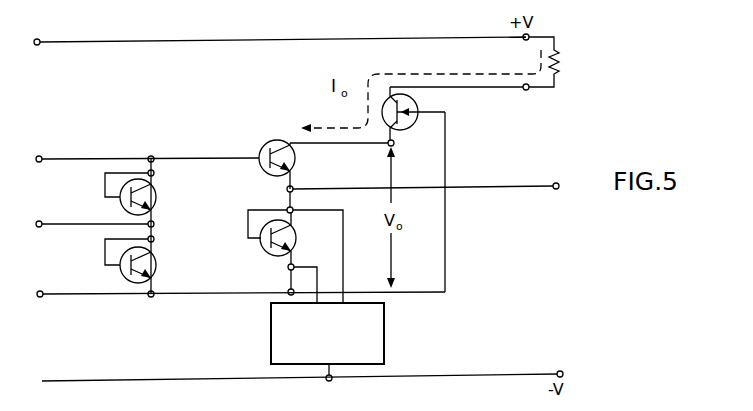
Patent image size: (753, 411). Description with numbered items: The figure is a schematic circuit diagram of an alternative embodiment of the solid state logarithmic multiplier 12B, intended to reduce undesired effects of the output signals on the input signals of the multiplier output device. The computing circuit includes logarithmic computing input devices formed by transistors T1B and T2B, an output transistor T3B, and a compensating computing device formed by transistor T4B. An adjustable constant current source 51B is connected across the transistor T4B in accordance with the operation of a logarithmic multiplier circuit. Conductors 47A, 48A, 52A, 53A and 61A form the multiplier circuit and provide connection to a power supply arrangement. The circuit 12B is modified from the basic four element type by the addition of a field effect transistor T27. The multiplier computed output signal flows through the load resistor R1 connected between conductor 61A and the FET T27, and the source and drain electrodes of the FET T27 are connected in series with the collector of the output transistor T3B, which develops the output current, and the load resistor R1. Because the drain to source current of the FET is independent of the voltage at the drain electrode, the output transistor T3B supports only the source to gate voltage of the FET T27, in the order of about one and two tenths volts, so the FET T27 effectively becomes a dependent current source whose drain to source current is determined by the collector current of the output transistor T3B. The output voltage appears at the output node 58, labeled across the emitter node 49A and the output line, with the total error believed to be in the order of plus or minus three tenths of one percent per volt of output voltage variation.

The conductor 61A is at (356, 37).
The conductor 47A is at (213, 158).
The emitter node of transistor T3B 49A is at (287, 183).
The output node 58 is at (358, 147).
The conductor 53A is at (486, 189).
The conductor 48A is at (420, 293).
The adjustable constant current source 51B is at (384, 353).
The conductor 52A is at (465, 376).
The logarithmic multiplier 12B is at (132, 226).
The transistor T1B is at (157, 197).
The transistor T2B is at (157, 265).
The output transistor T3B is at (296, 159).
The transistor T4B is at (270, 255).
The field effect transistor T27 is at (413, 123).
The load resistor R1 is at (561, 62).